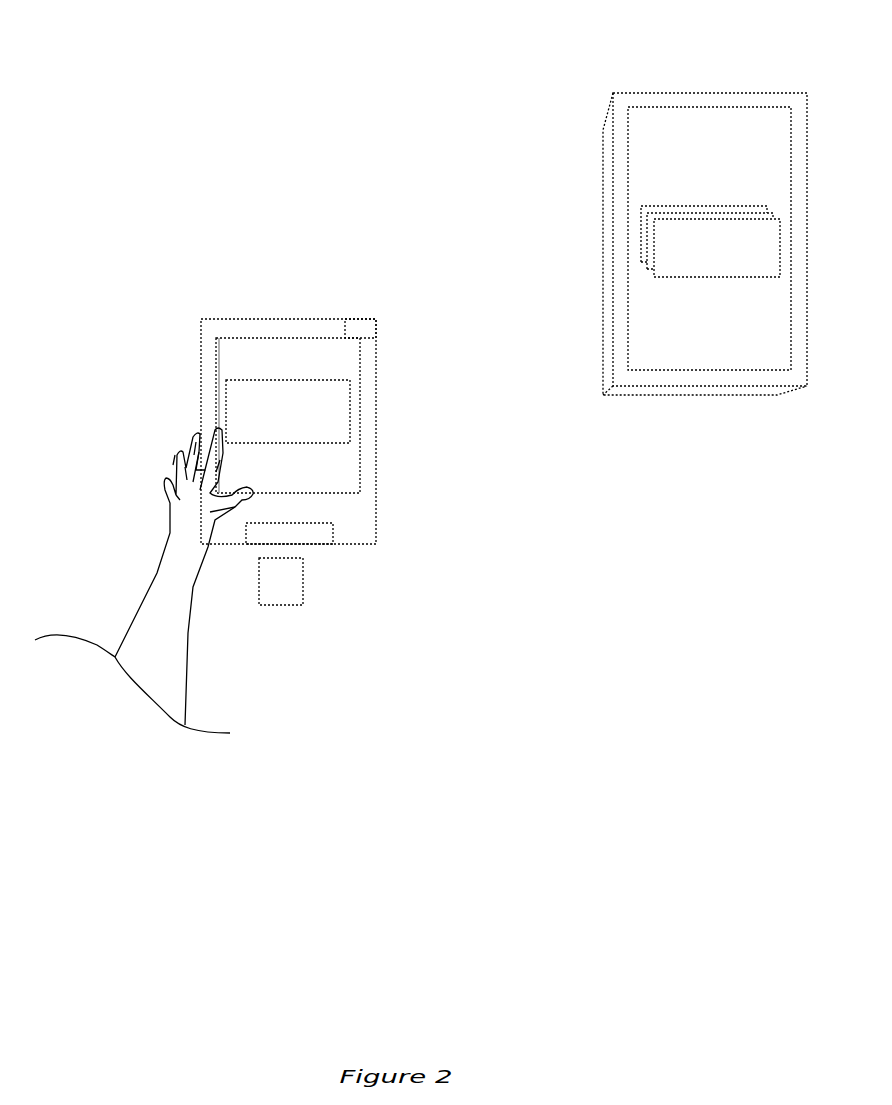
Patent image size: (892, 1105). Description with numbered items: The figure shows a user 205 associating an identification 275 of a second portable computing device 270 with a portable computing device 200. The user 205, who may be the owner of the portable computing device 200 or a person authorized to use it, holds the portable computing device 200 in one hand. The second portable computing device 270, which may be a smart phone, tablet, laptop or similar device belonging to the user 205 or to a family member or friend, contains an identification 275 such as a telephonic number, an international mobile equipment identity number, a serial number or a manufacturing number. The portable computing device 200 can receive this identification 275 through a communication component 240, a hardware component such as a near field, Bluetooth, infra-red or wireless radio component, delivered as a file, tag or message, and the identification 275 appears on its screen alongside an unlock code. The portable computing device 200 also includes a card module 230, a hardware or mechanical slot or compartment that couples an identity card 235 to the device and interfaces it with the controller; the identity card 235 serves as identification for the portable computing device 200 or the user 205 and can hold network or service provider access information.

The portable computing device 200 is at (237, 318).
The user 205 is at (144, 580).
The card module 230 is at (318, 523).
The identity card 235 is at (287, 613).
The communication component 240 is at (357, 316).
The second portable computing device 270 is at (700, 90).
The identification 275 is at (503, 324).